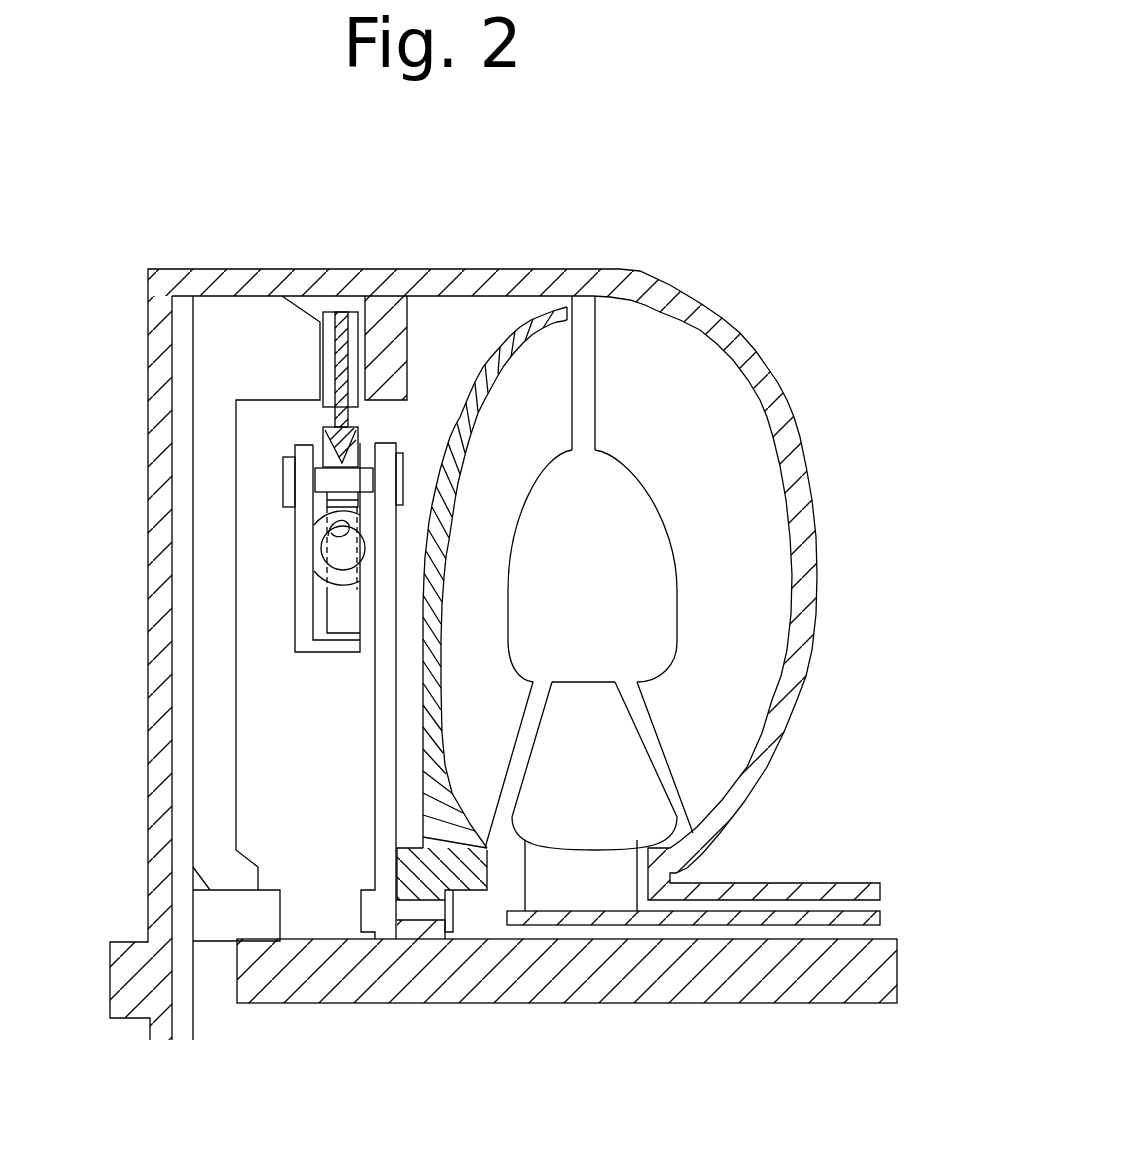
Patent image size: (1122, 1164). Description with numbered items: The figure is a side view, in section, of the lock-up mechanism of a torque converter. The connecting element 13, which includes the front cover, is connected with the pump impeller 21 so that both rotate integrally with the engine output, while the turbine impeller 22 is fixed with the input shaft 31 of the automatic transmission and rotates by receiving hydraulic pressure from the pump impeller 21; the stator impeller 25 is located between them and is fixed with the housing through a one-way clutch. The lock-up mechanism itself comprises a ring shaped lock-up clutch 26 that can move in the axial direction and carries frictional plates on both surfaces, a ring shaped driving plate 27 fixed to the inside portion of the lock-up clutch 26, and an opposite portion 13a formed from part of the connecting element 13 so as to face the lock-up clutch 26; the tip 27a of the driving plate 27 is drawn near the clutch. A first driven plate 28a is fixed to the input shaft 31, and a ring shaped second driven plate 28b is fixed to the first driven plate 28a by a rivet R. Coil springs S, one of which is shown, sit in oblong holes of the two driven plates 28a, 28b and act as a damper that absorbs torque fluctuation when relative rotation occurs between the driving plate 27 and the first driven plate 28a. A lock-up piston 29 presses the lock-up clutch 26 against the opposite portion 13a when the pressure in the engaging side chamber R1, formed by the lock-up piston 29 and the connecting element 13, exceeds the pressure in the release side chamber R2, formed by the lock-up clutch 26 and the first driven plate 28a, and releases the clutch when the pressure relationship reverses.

The connecting element 13 is at (148, 487).
The opposite portion 13a is at (405, 330).
The pump impeller 21 is at (695, 357).
The turbine impeller 22 is at (552, 350).
The stator impeller 25 is at (583, 682).
The lock-up clutch 26 is at (363, 332).
The driving plate 27 is at (323, 433).
The tip of adjusting member 27a is at (358, 433).
The first driven plate 28a is at (375, 723).
The second driven plate 28b is at (295, 592).
The lock-up piston 29 is at (193, 382).
The input shaft 31 is at (758, 1003).
The rivet R is at (358, 457).
The engaging side chamber R1 is at (177, 698).
The release side chamber R2 is at (502, 312).
The coil spring S is at (325, 547).